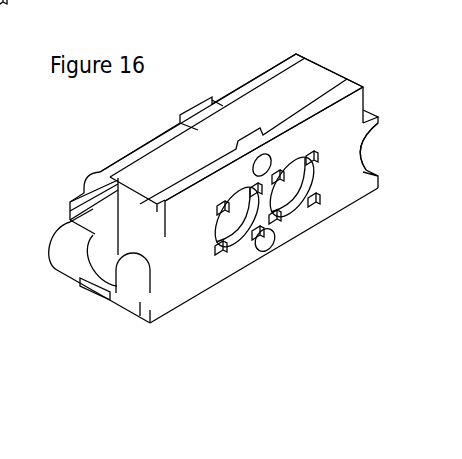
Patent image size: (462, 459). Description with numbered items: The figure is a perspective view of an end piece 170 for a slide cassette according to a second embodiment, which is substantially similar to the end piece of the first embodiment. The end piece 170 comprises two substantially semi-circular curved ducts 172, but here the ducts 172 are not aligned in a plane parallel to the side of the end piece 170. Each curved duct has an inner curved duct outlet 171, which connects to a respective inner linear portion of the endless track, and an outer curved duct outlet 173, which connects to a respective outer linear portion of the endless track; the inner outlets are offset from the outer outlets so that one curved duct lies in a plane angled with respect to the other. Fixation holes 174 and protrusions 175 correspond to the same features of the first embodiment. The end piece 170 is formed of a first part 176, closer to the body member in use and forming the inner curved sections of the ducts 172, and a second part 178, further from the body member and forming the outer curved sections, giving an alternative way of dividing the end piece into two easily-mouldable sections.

The end piece 170 is at (197, 320).
The inner curved duct outlet 171 is at (297, 182).
The curved duct 172 is at (230, 225).
The outer curved duct outlet 173 is at (140, 283).
The fixation hole 174 is at (267, 243).
The protrusion 175 is at (284, 222).
The first part 176 is at (347, 115).
The second part 178 is at (315, 78).